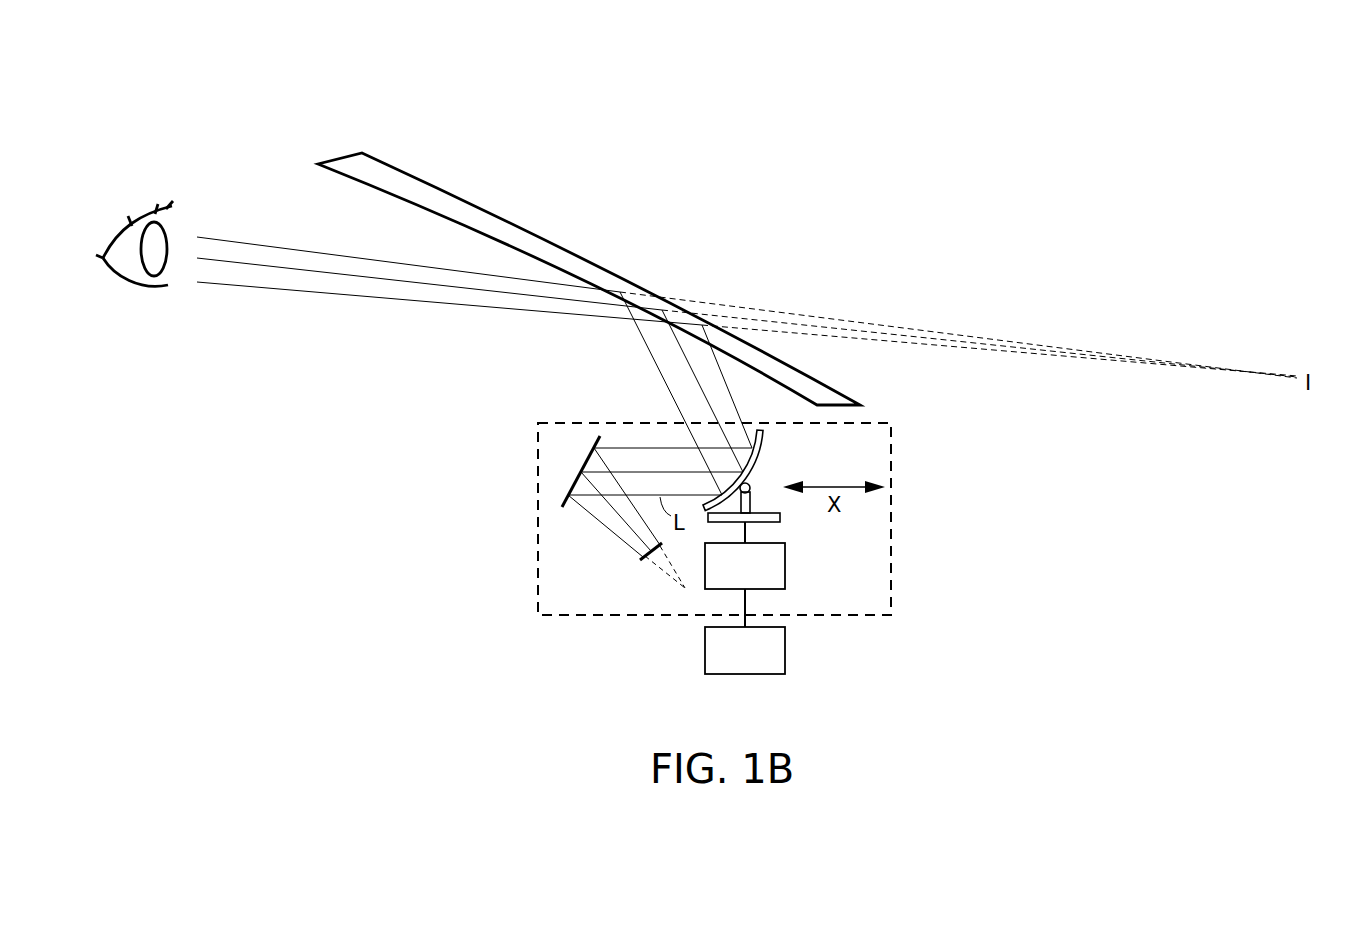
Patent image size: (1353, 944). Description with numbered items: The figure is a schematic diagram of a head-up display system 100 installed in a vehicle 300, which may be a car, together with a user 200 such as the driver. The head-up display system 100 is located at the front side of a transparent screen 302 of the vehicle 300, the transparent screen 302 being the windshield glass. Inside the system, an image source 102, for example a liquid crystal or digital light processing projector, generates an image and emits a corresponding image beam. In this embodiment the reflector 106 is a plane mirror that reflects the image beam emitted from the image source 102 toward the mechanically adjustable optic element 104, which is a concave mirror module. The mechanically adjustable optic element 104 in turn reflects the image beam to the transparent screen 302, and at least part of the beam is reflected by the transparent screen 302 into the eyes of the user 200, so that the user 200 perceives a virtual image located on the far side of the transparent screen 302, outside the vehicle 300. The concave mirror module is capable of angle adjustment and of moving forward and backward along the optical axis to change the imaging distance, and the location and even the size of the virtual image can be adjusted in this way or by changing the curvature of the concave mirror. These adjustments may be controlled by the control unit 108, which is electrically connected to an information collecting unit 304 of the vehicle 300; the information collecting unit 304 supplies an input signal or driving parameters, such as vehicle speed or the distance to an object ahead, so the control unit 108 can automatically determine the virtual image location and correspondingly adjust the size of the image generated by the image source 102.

The vehicle 300 is at (992, 90).
The transparent screen 302 is at (387, 173).
The user 200 is at (150, 222).
The head-up display system 100 is at (538, 423).
The reflector 106 is at (580, 478).
The mechanically adjustable optic element 104 is at (762, 461).
The image source 102 is at (648, 562).
The control unit 108 is at (745, 555).
The information collecting unit 304 is at (745, 631).